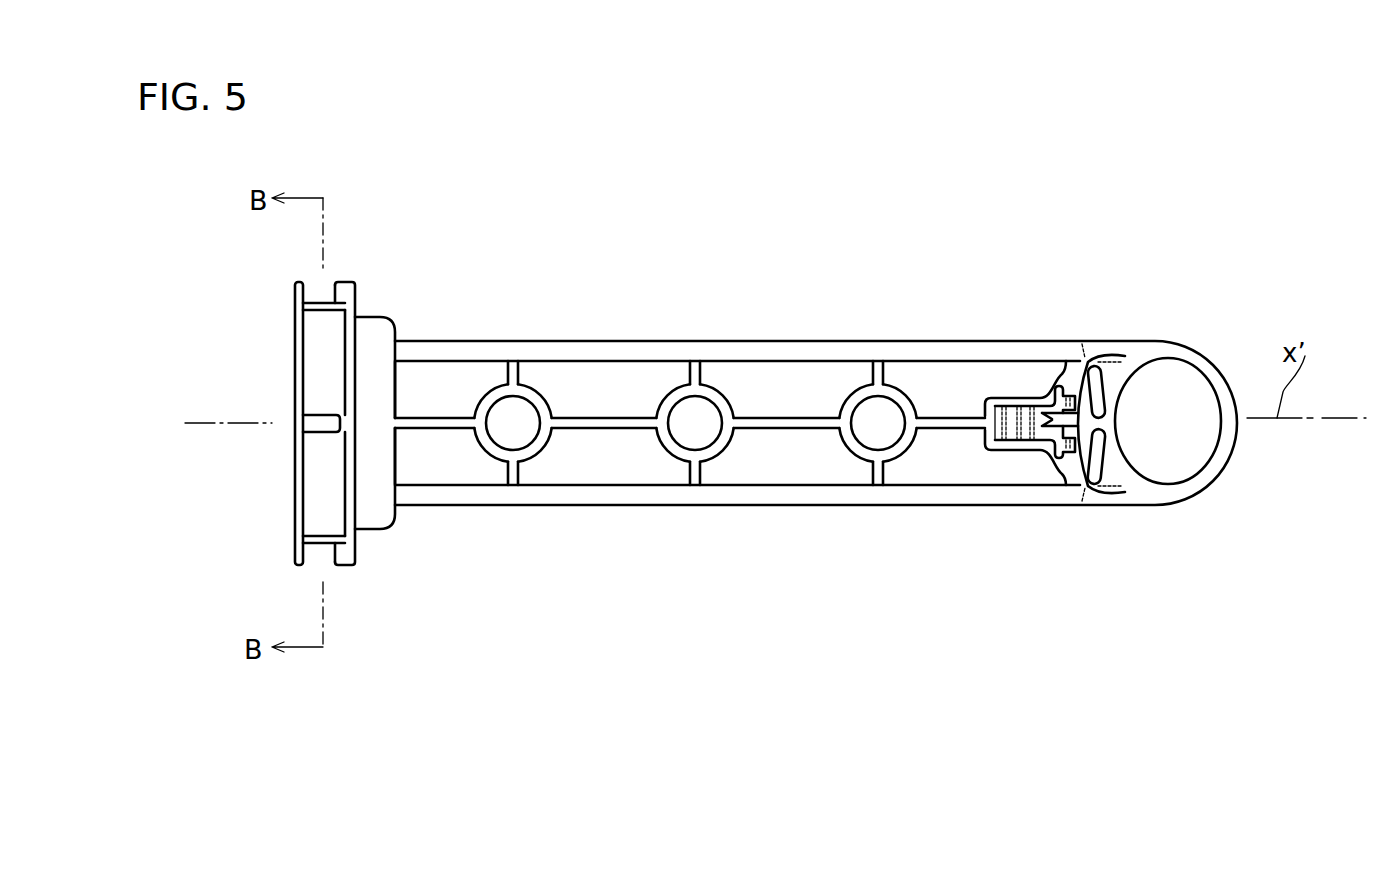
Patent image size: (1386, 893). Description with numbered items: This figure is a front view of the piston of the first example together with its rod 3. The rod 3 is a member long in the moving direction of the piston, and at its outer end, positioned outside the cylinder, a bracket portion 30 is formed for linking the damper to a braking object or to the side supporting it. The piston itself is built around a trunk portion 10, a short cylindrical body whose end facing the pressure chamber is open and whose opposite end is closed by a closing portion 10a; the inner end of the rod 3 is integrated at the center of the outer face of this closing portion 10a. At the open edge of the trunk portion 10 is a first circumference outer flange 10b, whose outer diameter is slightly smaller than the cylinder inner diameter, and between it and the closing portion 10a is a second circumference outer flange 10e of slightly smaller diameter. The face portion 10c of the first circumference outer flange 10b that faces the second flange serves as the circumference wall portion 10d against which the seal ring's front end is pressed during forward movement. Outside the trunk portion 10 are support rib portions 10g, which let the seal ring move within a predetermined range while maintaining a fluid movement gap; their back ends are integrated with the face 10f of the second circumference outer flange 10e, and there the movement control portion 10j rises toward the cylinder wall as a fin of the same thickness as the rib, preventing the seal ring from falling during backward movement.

The rod 3 is at (795, 495).
The bracket portion 30 is at (1177, 462).
The trunk portion 10 is at (330, 503).
The closing portion 10a is at (397, 390).
The first circumference outer flange 10b is at (297, 287).
The face portion 10c is at (313, 362).
The circumference wall portion 10d is at (262, 343).
The second circumference outer flange 10e is at (350, 343).
The face 10f is at (338, 478).
The support rib portion 10g is at (318, 297).
The movement control portion 10j is at (343, 280).